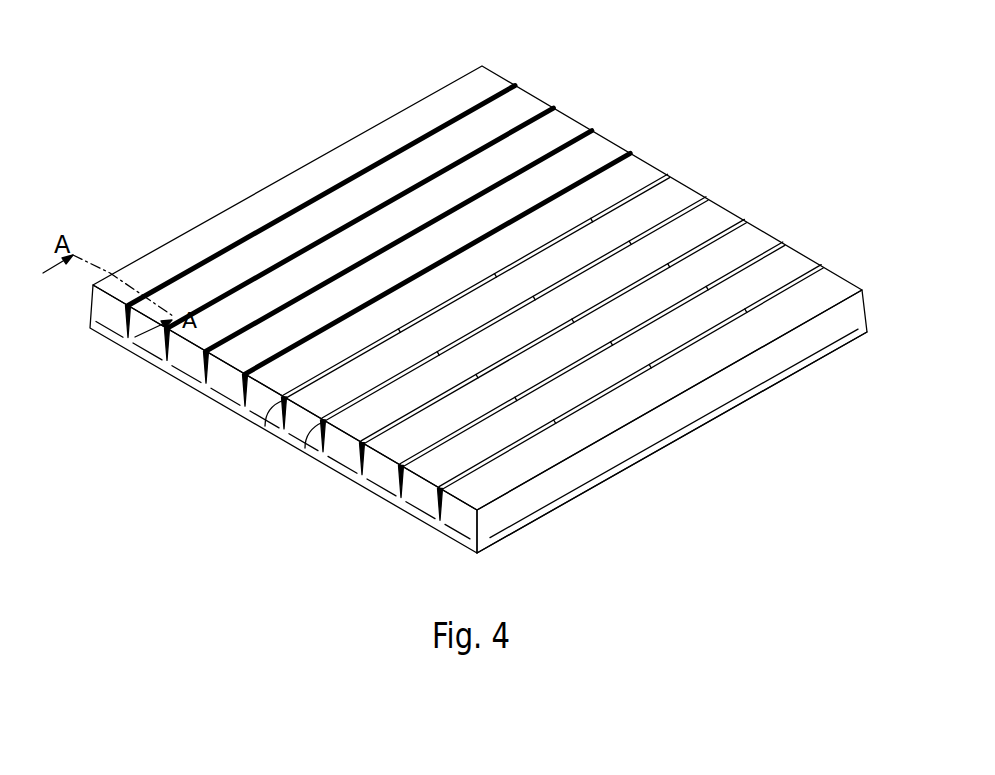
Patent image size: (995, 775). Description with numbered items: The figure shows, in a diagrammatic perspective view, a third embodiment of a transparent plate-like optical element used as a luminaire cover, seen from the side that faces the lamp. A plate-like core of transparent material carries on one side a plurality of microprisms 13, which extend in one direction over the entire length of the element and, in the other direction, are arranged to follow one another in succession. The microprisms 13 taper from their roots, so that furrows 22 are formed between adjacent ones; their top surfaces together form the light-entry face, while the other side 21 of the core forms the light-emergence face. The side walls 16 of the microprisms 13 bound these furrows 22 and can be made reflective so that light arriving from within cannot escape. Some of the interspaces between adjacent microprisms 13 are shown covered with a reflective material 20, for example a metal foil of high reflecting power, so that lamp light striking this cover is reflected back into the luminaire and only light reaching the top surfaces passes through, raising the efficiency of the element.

The microprisms 13 is at (807, 255).
The side walls 16 is at (165, 377).
The reflective material 20 is at (560, 109).
The other side of the core 21 is at (600, 483).
The furrows 22 is at (265, 426).